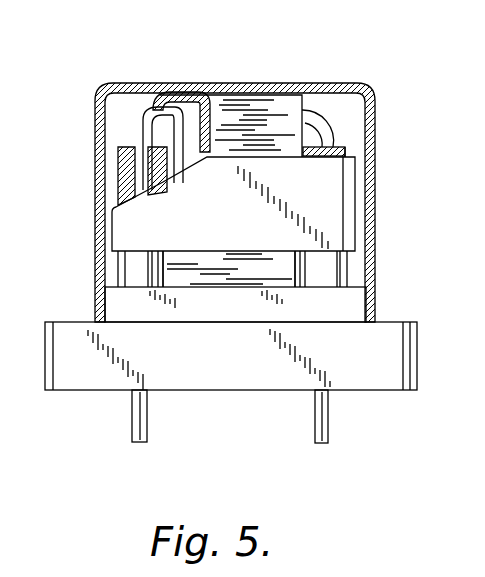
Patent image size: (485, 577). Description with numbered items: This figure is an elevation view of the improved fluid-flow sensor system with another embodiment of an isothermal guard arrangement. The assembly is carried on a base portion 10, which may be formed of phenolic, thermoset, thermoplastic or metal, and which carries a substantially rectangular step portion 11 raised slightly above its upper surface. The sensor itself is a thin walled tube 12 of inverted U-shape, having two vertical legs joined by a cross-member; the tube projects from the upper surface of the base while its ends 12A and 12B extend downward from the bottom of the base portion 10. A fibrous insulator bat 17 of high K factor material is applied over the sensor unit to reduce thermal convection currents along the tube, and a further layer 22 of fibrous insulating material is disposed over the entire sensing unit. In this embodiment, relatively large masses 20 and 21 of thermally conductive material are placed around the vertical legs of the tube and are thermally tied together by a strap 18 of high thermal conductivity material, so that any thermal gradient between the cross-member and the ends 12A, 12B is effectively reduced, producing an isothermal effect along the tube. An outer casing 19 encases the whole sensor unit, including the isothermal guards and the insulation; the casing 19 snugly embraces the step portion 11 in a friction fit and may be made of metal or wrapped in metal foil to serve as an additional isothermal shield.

The base portion 10 is at (380, 333).
The step portion 11 is at (115, 297).
The thin walled tube 12 is at (142, 122).
The tube end 12A is at (130, 417).
The tube end 12B is at (328, 422).
The fibrous insulator bat 17 is at (197, 88).
The strap 18 is at (115, 223).
The outer casing 19 is at (119, 82).
The mass of thermally conductive material 20 is at (120, 167).
The mass of thermally conductive material 21 is at (342, 148).
The layer of fibrous insulating material 22 is at (300, 91).